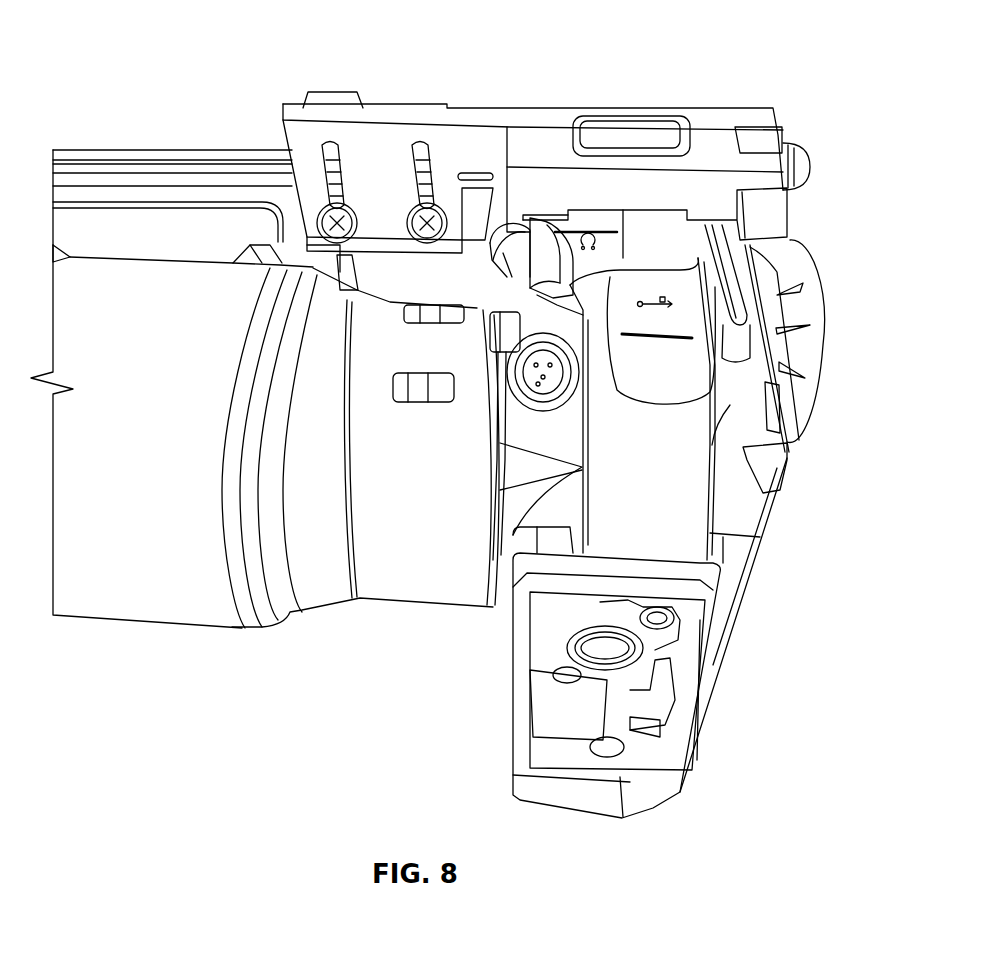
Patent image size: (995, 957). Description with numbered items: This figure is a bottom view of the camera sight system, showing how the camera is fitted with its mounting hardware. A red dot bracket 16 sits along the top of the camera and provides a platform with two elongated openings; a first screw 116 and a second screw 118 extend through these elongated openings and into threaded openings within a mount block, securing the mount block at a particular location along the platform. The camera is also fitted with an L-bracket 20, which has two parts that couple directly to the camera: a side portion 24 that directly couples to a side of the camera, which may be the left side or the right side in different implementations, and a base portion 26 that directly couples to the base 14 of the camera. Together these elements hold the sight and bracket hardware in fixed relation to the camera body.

The base 14 is at (752, 550).
The red dot bracket 16 is at (543, 123).
The L-bracket 20 is at (677, 492).
The side portion 24 is at (733, 268).
The base portion 26 is at (690, 726).
The first screw 116 is at (340, 212).
The second screw 118 is at (430, 212).